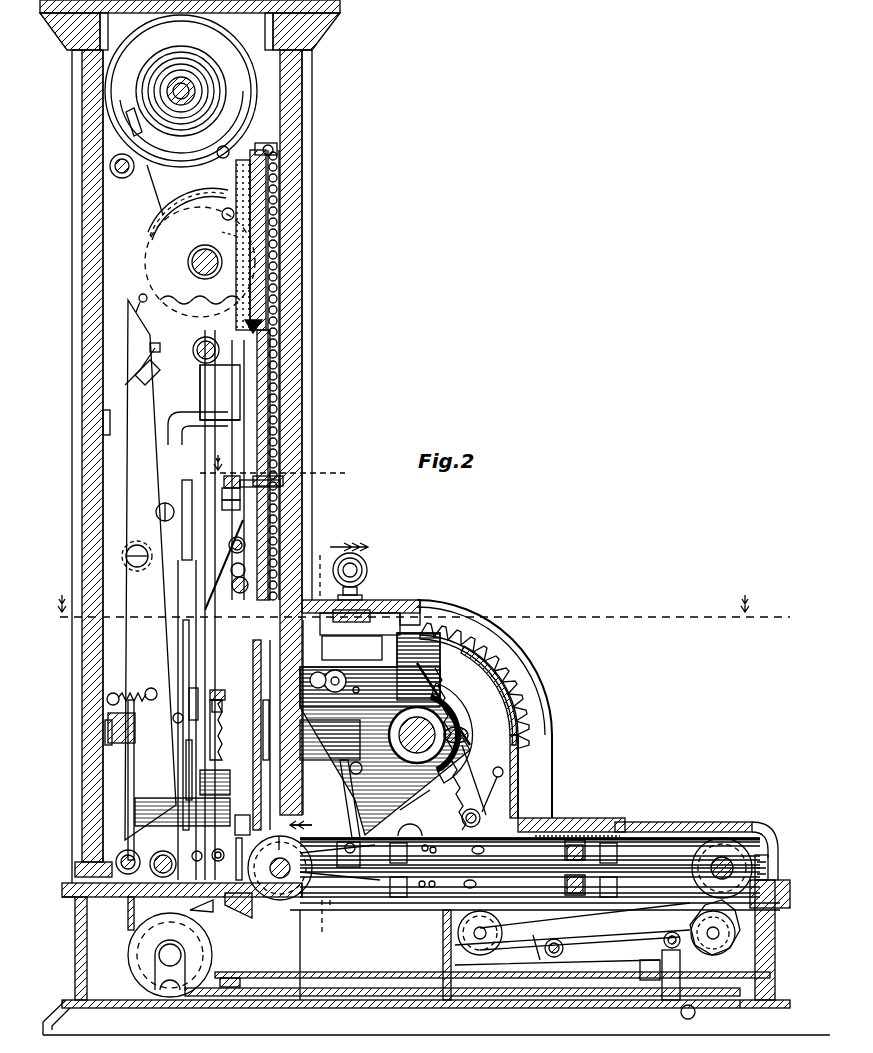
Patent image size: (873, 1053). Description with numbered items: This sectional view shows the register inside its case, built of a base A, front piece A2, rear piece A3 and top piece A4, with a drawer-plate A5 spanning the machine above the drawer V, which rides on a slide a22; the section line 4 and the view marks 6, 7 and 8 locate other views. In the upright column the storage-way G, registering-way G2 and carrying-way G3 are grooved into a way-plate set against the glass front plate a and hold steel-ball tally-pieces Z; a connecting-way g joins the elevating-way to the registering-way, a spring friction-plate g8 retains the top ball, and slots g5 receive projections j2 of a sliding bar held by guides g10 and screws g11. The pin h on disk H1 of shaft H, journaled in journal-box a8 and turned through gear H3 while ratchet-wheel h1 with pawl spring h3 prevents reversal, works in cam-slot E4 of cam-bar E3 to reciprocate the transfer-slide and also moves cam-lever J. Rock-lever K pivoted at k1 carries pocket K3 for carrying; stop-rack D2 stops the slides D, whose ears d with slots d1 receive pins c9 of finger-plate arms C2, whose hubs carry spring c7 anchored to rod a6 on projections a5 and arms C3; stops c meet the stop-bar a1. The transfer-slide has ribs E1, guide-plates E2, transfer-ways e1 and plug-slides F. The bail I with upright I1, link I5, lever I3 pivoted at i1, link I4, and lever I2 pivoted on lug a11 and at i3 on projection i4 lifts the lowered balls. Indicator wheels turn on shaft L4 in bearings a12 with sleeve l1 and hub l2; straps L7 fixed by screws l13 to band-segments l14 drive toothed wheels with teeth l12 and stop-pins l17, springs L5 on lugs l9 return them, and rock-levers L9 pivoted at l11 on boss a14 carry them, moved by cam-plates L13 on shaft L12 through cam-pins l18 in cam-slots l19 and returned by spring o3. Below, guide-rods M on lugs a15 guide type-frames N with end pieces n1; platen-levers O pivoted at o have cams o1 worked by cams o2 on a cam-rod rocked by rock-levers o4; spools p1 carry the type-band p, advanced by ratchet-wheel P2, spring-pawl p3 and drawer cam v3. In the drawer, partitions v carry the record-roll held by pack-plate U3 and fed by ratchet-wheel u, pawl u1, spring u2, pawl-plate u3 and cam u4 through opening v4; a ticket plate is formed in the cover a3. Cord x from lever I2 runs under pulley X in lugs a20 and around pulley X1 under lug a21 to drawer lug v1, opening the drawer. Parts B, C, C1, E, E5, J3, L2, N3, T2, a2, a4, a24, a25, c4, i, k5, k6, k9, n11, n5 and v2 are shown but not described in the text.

The top piece A4 is at (332, 14).
The spring casing L2 is at (257, 66).
The hub l2 is at (170, 75).
The sleeve l1 is at (181, 72).
The shaft L4 is at (192, 74).
The spring L5 is at (224, 110).
The connecting-way g is at (266, 144).
The lug l9 is at (120, 178).
The bearing a12 is at (152, 180).
The steel strap L7 is at (182, 190).
The spring friction-plate g8 is at (220, 159).
The carrying-way G3 is at (250, 177).
The storage-way G is at (272, 206).
The tally-piece Z is at (281, 245).
The band-segment l14 is at (200, 262).
The lug a11 is at (218, 216).
The stop-pin l17 is at (221, 229).
The teeth l12 is at (213, 280).
The screw l13 is at (137, 309).
The cam-pin l18 is at (150, 348).
The shaft L12 is at (196, 351).
The cam-slot l19 is at (158, 366).
The cam-plate L13 is at (211, 392).
The pocket K3 is at (256, 328).
The front piece A2 is at (306, 332).
The front plate a is at (291, 397).
The projection j2 is at (280, 474).
The section line 8 8 is at (274, 469).
The slot g5 is at (284, 482).
The registering-way G2 is at (268, 522).
The slide a22 is at (305, 545).
The rear piece A3 is at (78, 446).
The frame wall a4 is at (95, 504).
The rock-lever L9 is at (150, 570).
The pivot l11 is at (138, 548).
The block J3 is at (218, 483).
The screw g11 is at (222, 497).
The guide g10 is at (222, 510).
The rock-lever K is at (237, 532).
The lever I3 is at (187, 548).
The link I5 is at (224, 565).
The pivot i1 is at (165, 527).
The pivot k1 is at (235, 566).
The pin k9 is at (234, 591).
The section line 6 is at (319, 742).
The knob a25 is at (368, 569).
The plate a24 is at (356, 618).
The stop-bar a1 is at (396, 606).
The casing C is at (466, 638).
The finger-stop c is at (500, 656).
The housing wall a2 is at (518, 764).
The slide D is at (524, 775).
The arm C3 is at (392, 806).
The cam C1 is at (418, 662).
The arm C2 is at (390, 682).
The plug-slide F is at (322, 655).
The ear d is at (336, 670).
The elongated slot d1 is at (317, 682).
The pin c9 is at (355, 686).
The disk H1 is at (330, 732).
The spring c7 is at (428, 690).
The beveled gear H3 is at (448, 722).
The rod a6 is at (466, 737).
The ring c4 is at (460, 760).
The projection a5 is at (450, 749).
The frame B is at (415, 800).
The journal-box a8 is at (417, 824).
The ratchet-wheel h1 is at (469, 800).
The pin h is at (329, 772).
The spring h3 is at (487, 790).
The pin k5 is at (350, 767).
The lever k6 is at (350, 799).
The slide E is at (297, 814).
The rib E1 is at (288, 770).
The guide-plate E2 is at (288, 790).
The transfer-way e1 is at (270, 730).
The cam-bar E3 is at (222, 730).
The cam-slot E4 is at (218, 781).
The block E5 is at (244, 825).
The upright portion I1 is at (182, 648).
The link I4 is at (188, 684).
The spring o3 is at (134, 793).
The rock-lever o4 is at (133, 733).
The pin i is at (108, 744).
The lever I2 is at (128, 780).
The cam-lever J is at (183, 763).
The stop-rack D2 is at (221, 686).
The shaft H is at (224, 702).
The ratchet-wheel P2 is at (269, 832).
The arrow 7 is at (296, 830).
The pulley N3 is at (310, 868).
The end piece n1 is at (398, 870).
The block n11 is at (609, 870).
The boss a14 is at (440, 872).
The platen-lever O is at (362, 864).
The cam o1 is at (565, 867).
The bar T2 is at (603, 920).
The spool p1 is at (636, 838).
The type-band p is at (650, 838).
The cover of the case a3 is at (662, 822).
The type-frame N is at (530, 858).
The guide-rod M is at (530, 873).
The lug a15 is at (770, 858).
The drawer-plate A5 is at (780, 880).
The pawl u1 is at (607, 927).
The ratchet-wheel u is at (713, 936).
The spring u2 is at (661, 943).
The pawl-plate u3 is at (585, 926).
The pack-plate U3 is at (572, 947).
The cam u4 is at (671, 968).
The partition v is at (549, 943).
The link v2 is at (530, 947).
The opening v4 is at (650, 969).
The lug a21 is at (745, 990).
The pulley X1 is at (700, 1012).
The lug a20 is at (170, 965).
The pulley X is at (140, 956).
The flexible cord x is at (128, 918).
The pivot o is at (195, 848).
The cam o2 is at (216, 845).
The pivot i3 is at (126, 854).
The projection i4 is at (163, 856).
The bail I is at (234, 854).
The cam v3 is at (201, 903).
The spring-pawl p3 is at (238, 905).
The lug v1 is at (242, 980).
The drawer V is at (416, 955).
The bar n5 is at (378, 882).
The base A is at (410, 1036).
The section line 4 4 is at (415, 611).